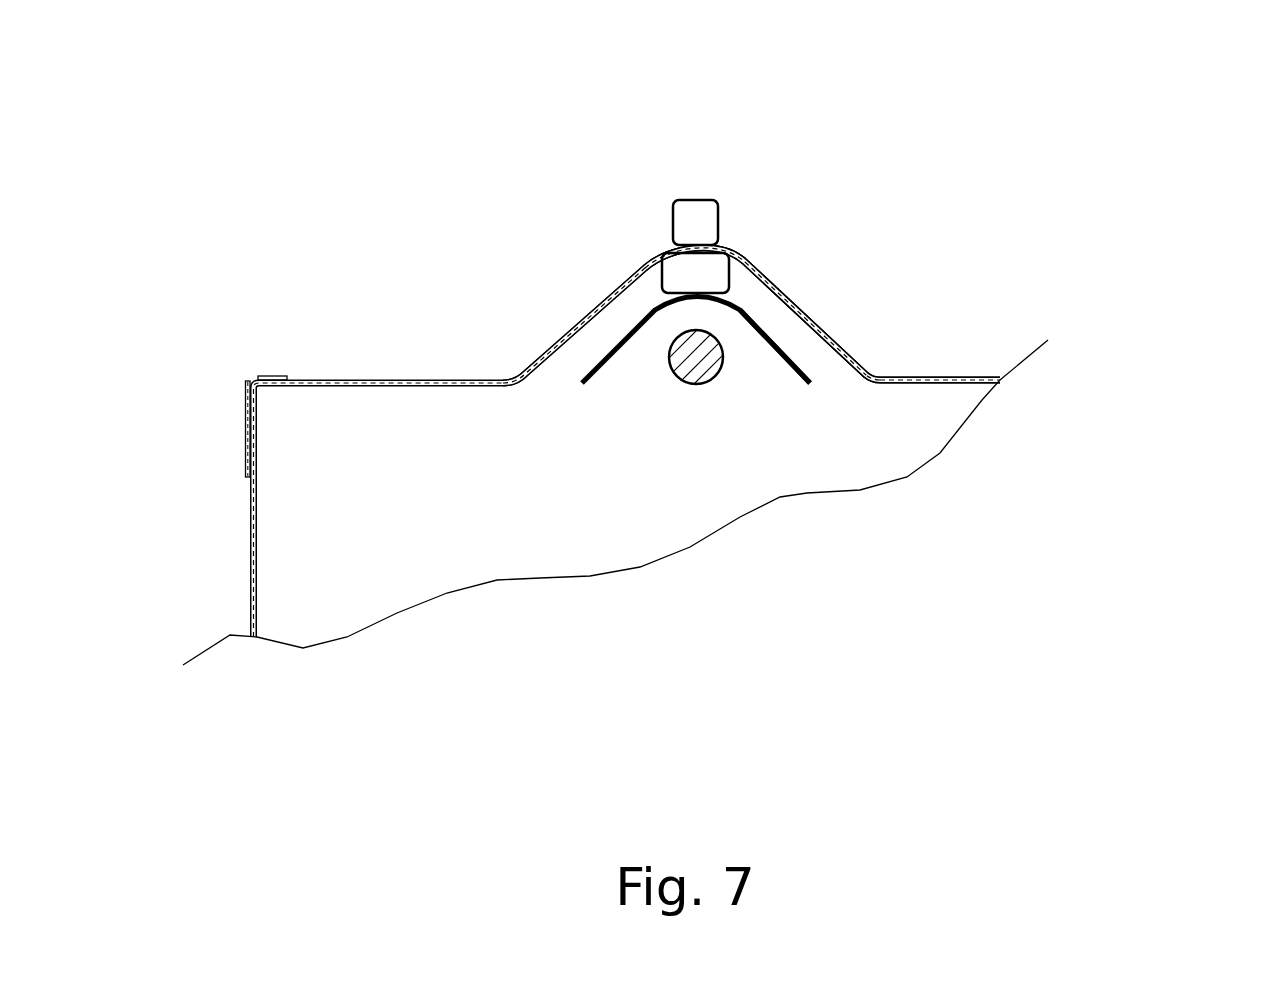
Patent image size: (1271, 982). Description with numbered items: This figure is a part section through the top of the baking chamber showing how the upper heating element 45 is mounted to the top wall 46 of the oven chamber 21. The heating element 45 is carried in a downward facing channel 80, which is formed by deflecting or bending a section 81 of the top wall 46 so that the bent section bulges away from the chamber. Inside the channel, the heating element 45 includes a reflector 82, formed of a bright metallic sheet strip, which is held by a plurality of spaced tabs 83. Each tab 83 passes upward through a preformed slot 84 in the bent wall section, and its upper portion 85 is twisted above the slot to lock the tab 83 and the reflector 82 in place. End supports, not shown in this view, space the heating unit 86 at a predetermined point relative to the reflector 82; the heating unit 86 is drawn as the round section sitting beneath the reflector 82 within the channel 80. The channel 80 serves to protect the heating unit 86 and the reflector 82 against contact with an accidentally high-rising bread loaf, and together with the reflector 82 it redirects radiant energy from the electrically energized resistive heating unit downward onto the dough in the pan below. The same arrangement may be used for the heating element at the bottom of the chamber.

The oven chamber 21 is at (320, 449).
The upper heating element 45 is at (755, 390).
The top wall 46 is at (960, 365).
The downward facing channel 80 is at (836, 338).
The section of the top wall 81 is at (812, 282).
The reflector 82 is at (620, 325).
The tab 83 is at (712, 268).
The preformed slot 84 is at (675, 238).
The upper portion 85 is at (690, 213).
The heating unit 86 is at (662, 385).